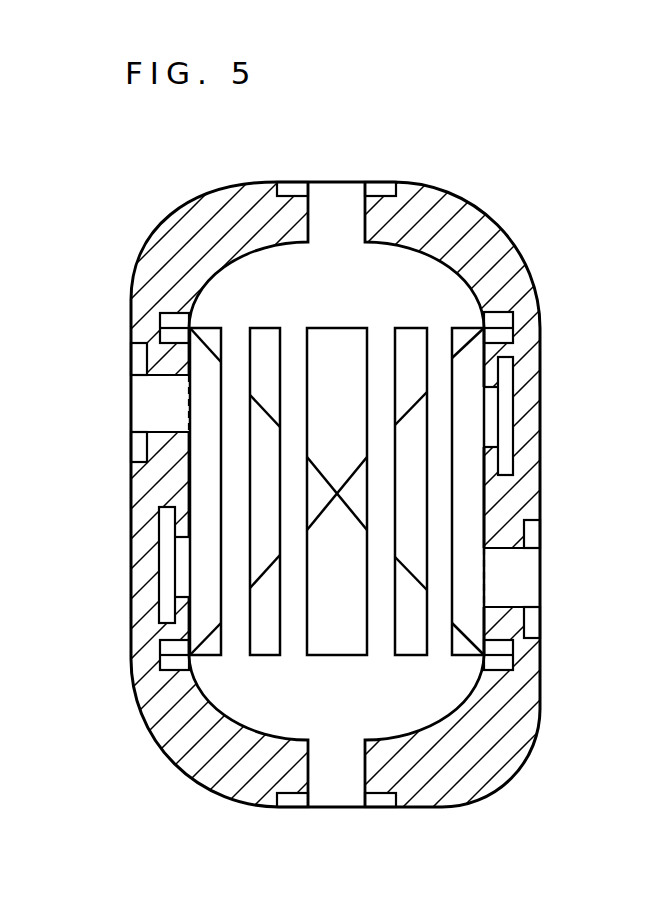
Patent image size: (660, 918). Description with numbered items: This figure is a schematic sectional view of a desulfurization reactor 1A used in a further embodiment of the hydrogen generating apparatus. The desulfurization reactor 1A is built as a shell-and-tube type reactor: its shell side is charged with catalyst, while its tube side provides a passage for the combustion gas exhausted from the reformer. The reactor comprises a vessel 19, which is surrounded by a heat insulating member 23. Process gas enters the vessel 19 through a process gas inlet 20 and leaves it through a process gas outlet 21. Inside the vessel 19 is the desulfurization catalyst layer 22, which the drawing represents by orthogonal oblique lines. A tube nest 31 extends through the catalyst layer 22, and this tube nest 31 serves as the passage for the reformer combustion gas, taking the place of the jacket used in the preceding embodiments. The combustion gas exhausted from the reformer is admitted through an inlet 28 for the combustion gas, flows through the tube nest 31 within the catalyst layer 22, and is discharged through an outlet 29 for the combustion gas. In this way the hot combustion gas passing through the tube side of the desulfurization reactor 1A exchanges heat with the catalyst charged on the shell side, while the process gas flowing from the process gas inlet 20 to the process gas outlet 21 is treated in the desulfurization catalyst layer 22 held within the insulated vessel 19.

The desulfurization reactor 1A is at (495, 210).
The vessel 19 is at (482, 274).
The process gas inlet 20 is at (120, 405).
The process gas outlet 21 is at (548, 578).
The desulfurization catalyst layer 22 is at (470, 529).
The heat insulating member 23 is at (503, 699).
The inlet for the combustion gas 28 is at (339, 822).
The outlet for the combustion gas 29 is at (333, 170).
The tube nest 31 is at (453, 436).